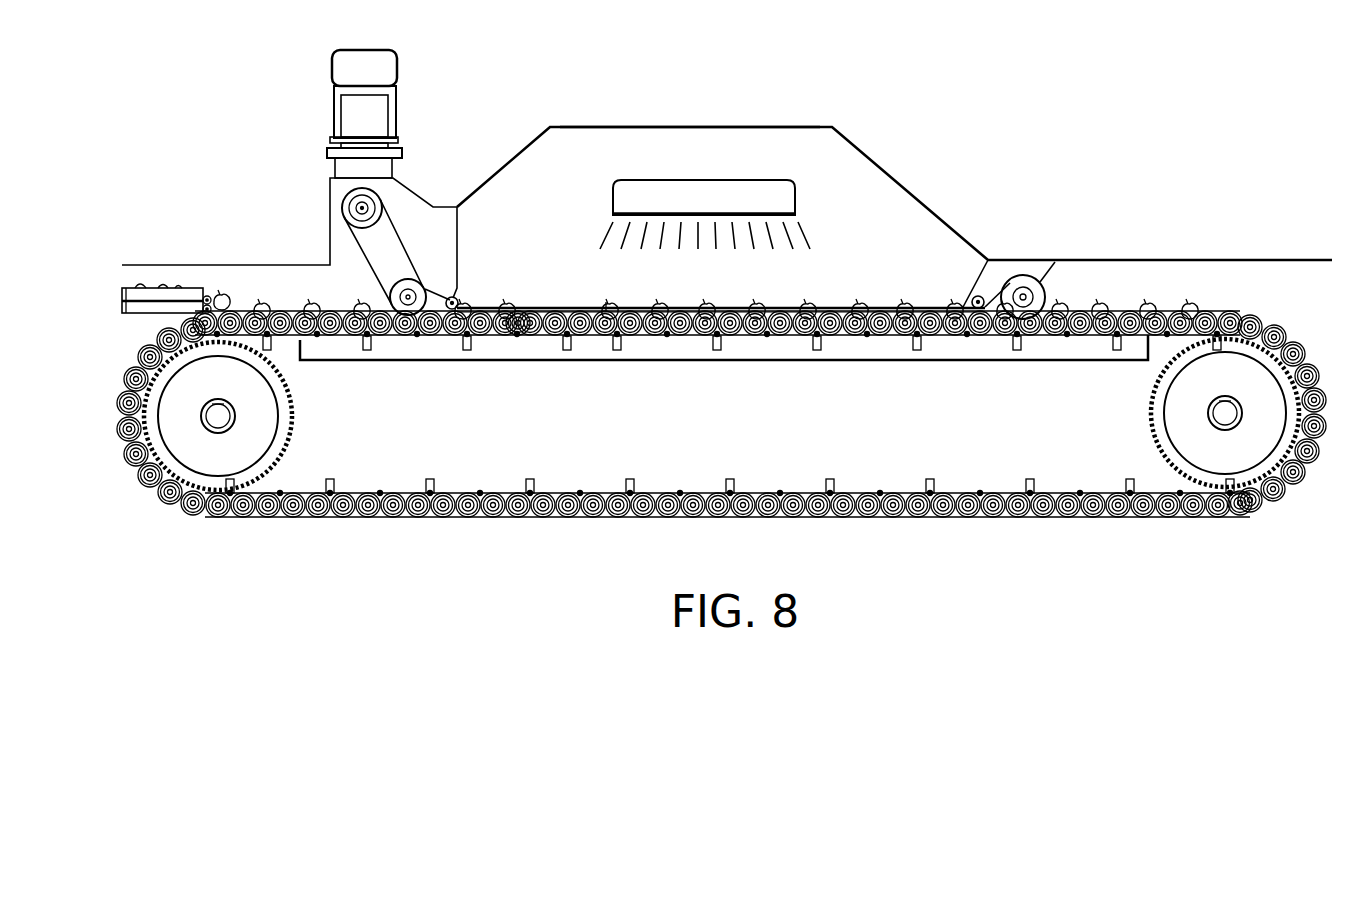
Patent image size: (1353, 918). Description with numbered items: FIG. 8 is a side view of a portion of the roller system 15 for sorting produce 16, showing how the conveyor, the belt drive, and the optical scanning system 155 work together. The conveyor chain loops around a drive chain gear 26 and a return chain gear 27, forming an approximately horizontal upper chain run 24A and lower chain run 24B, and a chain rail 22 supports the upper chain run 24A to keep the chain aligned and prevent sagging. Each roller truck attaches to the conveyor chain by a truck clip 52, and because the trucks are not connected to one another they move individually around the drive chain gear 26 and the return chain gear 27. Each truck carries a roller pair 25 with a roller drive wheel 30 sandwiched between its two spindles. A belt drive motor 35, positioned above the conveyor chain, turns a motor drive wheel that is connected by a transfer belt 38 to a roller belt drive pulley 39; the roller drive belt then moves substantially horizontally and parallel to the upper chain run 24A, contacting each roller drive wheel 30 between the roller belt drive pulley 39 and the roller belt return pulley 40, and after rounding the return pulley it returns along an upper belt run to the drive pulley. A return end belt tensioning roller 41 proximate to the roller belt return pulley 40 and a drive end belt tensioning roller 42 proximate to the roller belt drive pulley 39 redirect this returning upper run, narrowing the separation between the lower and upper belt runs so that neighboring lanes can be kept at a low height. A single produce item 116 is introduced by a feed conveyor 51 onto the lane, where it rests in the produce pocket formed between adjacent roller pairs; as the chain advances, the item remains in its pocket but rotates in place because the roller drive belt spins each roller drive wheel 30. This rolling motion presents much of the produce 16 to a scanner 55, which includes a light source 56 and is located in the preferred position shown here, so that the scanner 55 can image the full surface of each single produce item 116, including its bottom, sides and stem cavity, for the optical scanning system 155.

The roller system 15 is at (224, 130).
The produce 16 is at (142, 287).
The chain rail 22 is at (670, 350).
The upper chain run 24A is at (780, 340).
The lower chain run 24B is at (735, 490).
The roller pair 25 is at (515, 337).
The drive chain gear 26 is at (299, 424).
The return chain gear 27 is at (1162, 447).
The roller drive wheel 30 is at (1296, 350).
The belt drive motor 35 is at (348, 75).
The transfer belt 38 is at (376, 205).
The roller belt drive pulley 39 is at (418, 287).
The roller belt return pulley 40 is at (1025, 282).
The return end belt tensioning roller 41 is at (977, 297).
The drive end belt tensioning roller 42 is at (462, 303).
The feed conveyor 51 is at (185, 294).
The truck clip 52 is at (565, 350).
The scanner 55 is at (630, 143).
The light source 56 is at (705, 197).
The single produce item 116 is at (518, 311).
The optical scanning system 155 is at (537, 122).